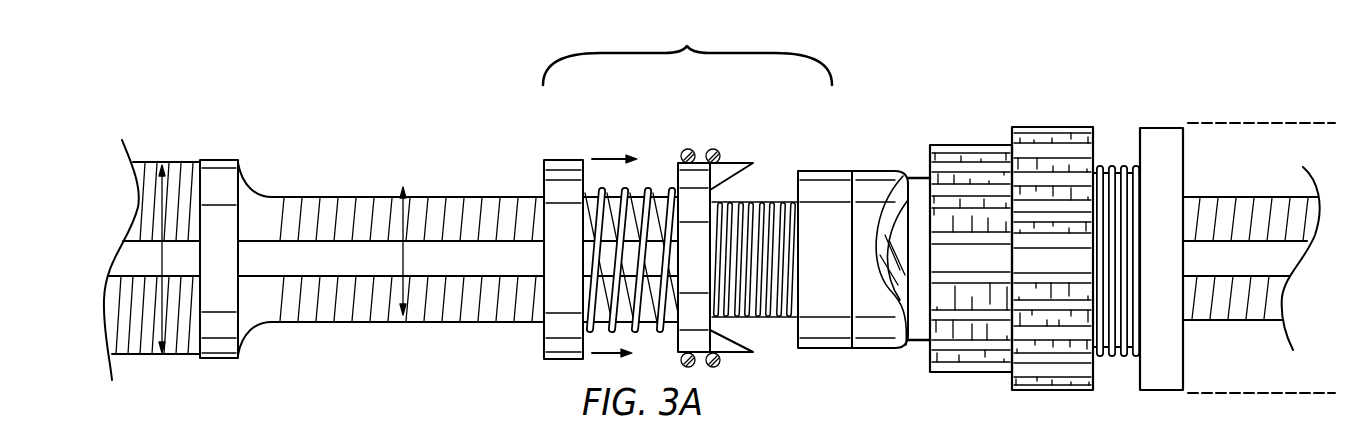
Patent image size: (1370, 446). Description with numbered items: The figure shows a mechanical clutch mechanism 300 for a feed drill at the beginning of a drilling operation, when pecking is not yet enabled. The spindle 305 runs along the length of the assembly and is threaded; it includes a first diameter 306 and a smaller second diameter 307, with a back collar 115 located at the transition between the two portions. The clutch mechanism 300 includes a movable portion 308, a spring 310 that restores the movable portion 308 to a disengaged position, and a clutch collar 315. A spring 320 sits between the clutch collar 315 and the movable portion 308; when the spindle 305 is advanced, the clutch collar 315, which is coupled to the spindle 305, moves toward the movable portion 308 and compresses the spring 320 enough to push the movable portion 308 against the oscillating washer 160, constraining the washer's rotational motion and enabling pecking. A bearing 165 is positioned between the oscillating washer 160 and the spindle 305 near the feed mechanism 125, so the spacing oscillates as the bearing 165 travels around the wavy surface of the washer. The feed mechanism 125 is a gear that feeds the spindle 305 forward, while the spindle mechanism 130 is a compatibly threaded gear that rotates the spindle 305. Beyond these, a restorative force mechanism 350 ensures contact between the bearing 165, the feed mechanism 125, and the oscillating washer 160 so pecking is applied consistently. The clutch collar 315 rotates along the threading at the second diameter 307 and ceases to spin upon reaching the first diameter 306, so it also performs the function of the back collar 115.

The clutch mechanism 300 is at (687, 56).
The spindle 305 is at (187, 175).
The first diameter 306 is at (145, 259).
The second diameter 307 is at (417, 251).
The back collar 115 is at (227, 157).
The clutch collar 315 is at (563, 358).
The spring 320 is at (585, 165).
The movable portion 308 is at (737, 353).
The spring 310 is at (770, 183).
The oscillating washer 160 is at (852, 173).
The bearing 165 is at (910, 307).
The feed mechanism 125 is at (967, 145).
The spindle mechanism 130 is at (1047, 390).
The restorative force mechanism 350 is at (1110, 170).